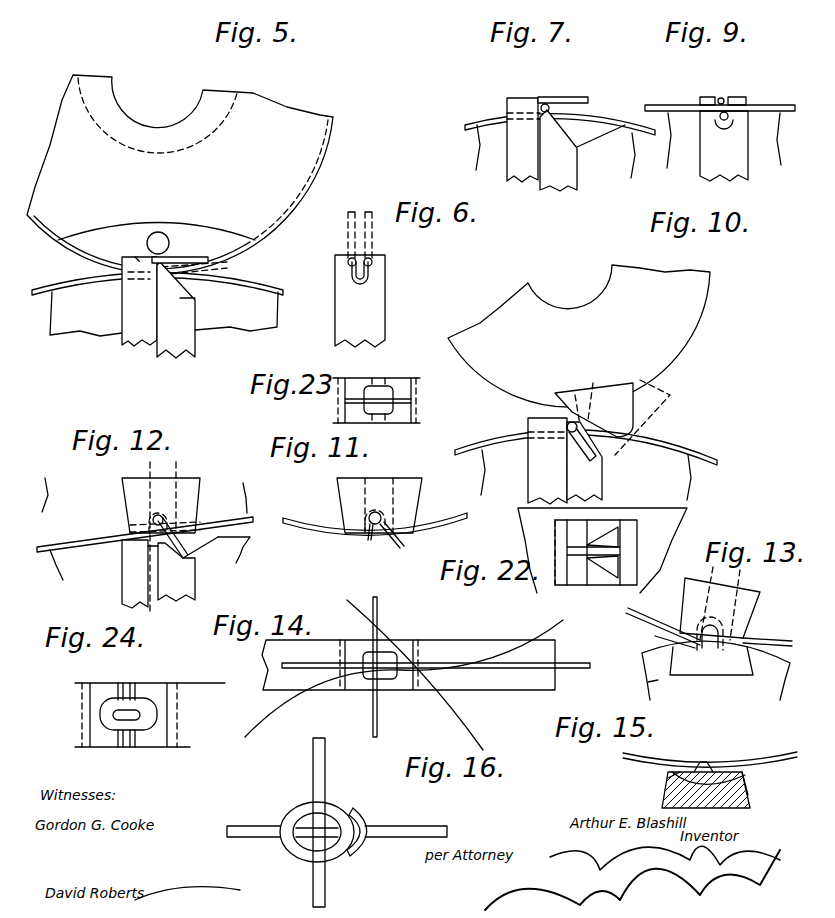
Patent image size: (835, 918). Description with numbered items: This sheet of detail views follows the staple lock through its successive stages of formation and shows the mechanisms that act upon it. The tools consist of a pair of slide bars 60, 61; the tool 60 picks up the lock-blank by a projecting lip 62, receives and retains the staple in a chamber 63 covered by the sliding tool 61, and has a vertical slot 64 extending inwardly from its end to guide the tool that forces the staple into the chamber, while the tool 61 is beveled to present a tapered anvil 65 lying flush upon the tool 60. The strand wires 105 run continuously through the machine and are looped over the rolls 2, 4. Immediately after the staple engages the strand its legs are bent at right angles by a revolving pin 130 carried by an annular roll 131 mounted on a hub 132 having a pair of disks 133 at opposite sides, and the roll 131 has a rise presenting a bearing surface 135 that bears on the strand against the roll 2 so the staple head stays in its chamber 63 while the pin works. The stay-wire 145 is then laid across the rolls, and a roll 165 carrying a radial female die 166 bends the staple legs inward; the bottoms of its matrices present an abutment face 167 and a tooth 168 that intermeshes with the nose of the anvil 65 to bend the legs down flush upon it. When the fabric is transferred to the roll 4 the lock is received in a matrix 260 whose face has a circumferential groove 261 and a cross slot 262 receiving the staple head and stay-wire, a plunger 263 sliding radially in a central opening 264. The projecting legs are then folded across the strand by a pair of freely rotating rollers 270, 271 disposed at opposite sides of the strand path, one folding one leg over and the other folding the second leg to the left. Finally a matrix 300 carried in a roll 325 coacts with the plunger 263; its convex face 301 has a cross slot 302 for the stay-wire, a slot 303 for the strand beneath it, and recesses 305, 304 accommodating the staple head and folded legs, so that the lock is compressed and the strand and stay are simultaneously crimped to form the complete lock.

In FIG. 5, the roll 2 is at (164, 314).
In FIG. 7, the roll 2 is at (555, 151).
In FIG. 10, the roll 2 is at (586, 475).
In FIG. 12, the roll 2 is at (242, 558).
In FIG. 13, the roll 4 is at (716, 670).
In FIG. 5, the slide bar tool 60 is at (139, 301).
In FIG. 6, the slide bar tool 60 is at (360, 301).
In FIG. 7, the slide bar tool 60 is at (523, 140).
In FIG. 9, the slide bar tool 60 is at (724, 146).
In FIG. 10, the slide bar tool 60 is at (550, 461).
In FIG. 12, the slide bar tool 60 is at (135, 574).
In FIG. 5, the slide bar tool 61 is at (176, 310).
In FIG. 7, the slide bar tool 61 is at (558, 150).
In FIG. 10, the slide bar tool 61 is at (584, 461).
In FIG. 12, the slide bar tool 61 is at (176, 572).
In FIG. 5, the projecting lip 62 is at (140, 258).
In FIG. 7, the projecting lip 62 is at (538, 102).
In FIG. 12, the projecting lip 62 is at (148, 545).
In FIG. 6, the chamber 63 is at (375, 283).
In FIG. 12, the chamber 63 is at (161, 584).
In FIG. 6, the vertical slot 64 is at (372, 262).
In FIG. 9, the vertical slot 64 is at (724, 96).
In FIG. 5, the tapered anvil 65 is at (232, 276).
In FIG. 7, the tapered anvil 65 is at (580, 128).
In FIG. 12, the tapered anvil 65 is at (210, 537).
In FIG. 5, the strand wire 105 is at (278, 288).
In FIG. 7, the strand wire 105 is at (637, 112).
In FIG. 9, the strand wire 105 is at (732, 118).
In FIG. 10, the strand wire 105 is at (673, 445).
In FIG. 13, the strand wire 105 is at (660, 612).
In FIG. 11, the strand wire 105 is at (445, 524).
In FIG. 12, the strand wire 105 is at (252, 515).
In FIG. 14, the strand wire 105 is at (578, 662).
In FIG. 16, the strand wire 105 is at (394, 826).
In FIG. 15, the strand wire 105 is at (763, 760).
In FIG. 5, the revolving pin 130 is at (160, 233).
In FIG. 5, the roll 131 is at (233, 245).
In FIG. 5, the hub 132 is at (207, 160).
In FIG. 5, the disks 133 is at (220, 232).
In FIG. 5, the bearing surface 135 is at (167, 258).
In FIG. 7, the stay-wire 145 is at (549, 105).
In FIG. 9, the stay-wire 145 is at (756, 104).
In FIG. 13, the stay-wire 145 is at (707, 646).
In FIG. 11, the stay-wire 145 is at (378, 535).
In FIG. 12, the stay-wire 145 is at (158, 523).
In FIG. 14, the stay-wire 145 is at (380, 612).
In FIG. 16, the stay-wire 145 is at (326, 764).
In FIG. 15, the stay-wire 145 is at (706, 762).
In FIG. 10, the roll 165 is at (579, 336).
In FIG. 22, the roll 165 is at (683, 513).
In FIG. 10, the radial female die 166 is at (612, 392).
In FIG. 22, the radial female die 166 is at (605, 530).
In FIG. 10, the abutment face 167 is at (668, 398).
In FIG. 22, the abutment face 167 is at (620, 540).
In FIG. 10, the rise or tooth 168 is at (625, 455).
In FIG. 22, the rise or tooth 168 is at (592, 565).
In FIG. 13, the matrix 260 is at (748, 595).
In FIG. 11, the matrix 260 is at (385, 488).
In FIG. 12, the matrix 260 is at (200, 488).
In FIG. 23, the matrix 260 is at (403, 385).
In FIG. 23, the groove 261 is at (405, 400).
In FIG. 23, the cross slot 262 is at (372, 386).
In FIG. 12, the plunger 263 is at (157, 475).
In FIG. 23, the central opening 264 is at (392, 410).
In FIG. 14, the roller 270 is at (258, 716).
In FIG. 14, the roller 271 is at (560, 624).
In FIG. 13, the matrix 300 is at (711, 672).
In FIG. 15, the matrix 300 is at (745, 776).
In FIG. 13, the convex face 301 is at (655, 637).
In FIG. 24, the cross slot 302 is at (128, 747).
In FIG. 24, the slot 303 is at (135, 714).
In FIG. 15, the slot 303 is at (668, 790).
In FIG. 24, the recess 304 is at (150, 705).
In FIG. 15, the recess 304 is at (748, 795).
In FIG. 24, the recess 305 is at (103, 697).
In FIG. 15, the recess 305 is at (668, 778).
In FIG. 13, the roll 325 is at (635, 683).